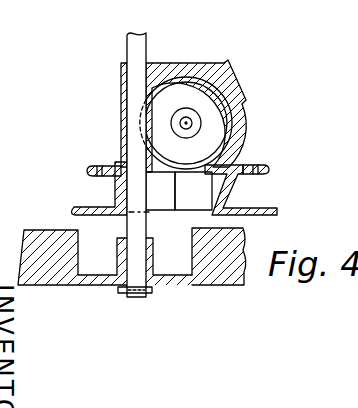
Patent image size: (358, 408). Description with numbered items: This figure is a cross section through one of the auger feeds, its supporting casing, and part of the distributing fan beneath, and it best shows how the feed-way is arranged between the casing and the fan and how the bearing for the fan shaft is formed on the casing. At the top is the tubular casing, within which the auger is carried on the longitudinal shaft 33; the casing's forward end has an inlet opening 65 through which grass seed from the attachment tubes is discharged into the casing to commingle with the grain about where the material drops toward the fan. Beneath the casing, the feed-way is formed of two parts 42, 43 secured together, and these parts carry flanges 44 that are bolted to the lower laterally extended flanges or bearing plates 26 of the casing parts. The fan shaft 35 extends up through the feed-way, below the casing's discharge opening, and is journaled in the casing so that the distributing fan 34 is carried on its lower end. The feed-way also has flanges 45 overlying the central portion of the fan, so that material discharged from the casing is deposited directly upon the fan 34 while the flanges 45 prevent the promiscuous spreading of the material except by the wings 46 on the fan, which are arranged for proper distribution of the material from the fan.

The flanges or bearing plates 26 is at (254, 167).
The shaft 33 is at (190, 123).
The distributing fan 34 is at (98, 283).
The fan shaft 35 is at (140, 297).
The feed-way part 42 is at (160, 191).
The feed-way part 43 is at (193, 191).
The flanges 44 is at (236, 184).
The flanges 45 is at (92, 208).
The wings 46 is at (233, 262).
The inlet opening 65 is at (224, 89).